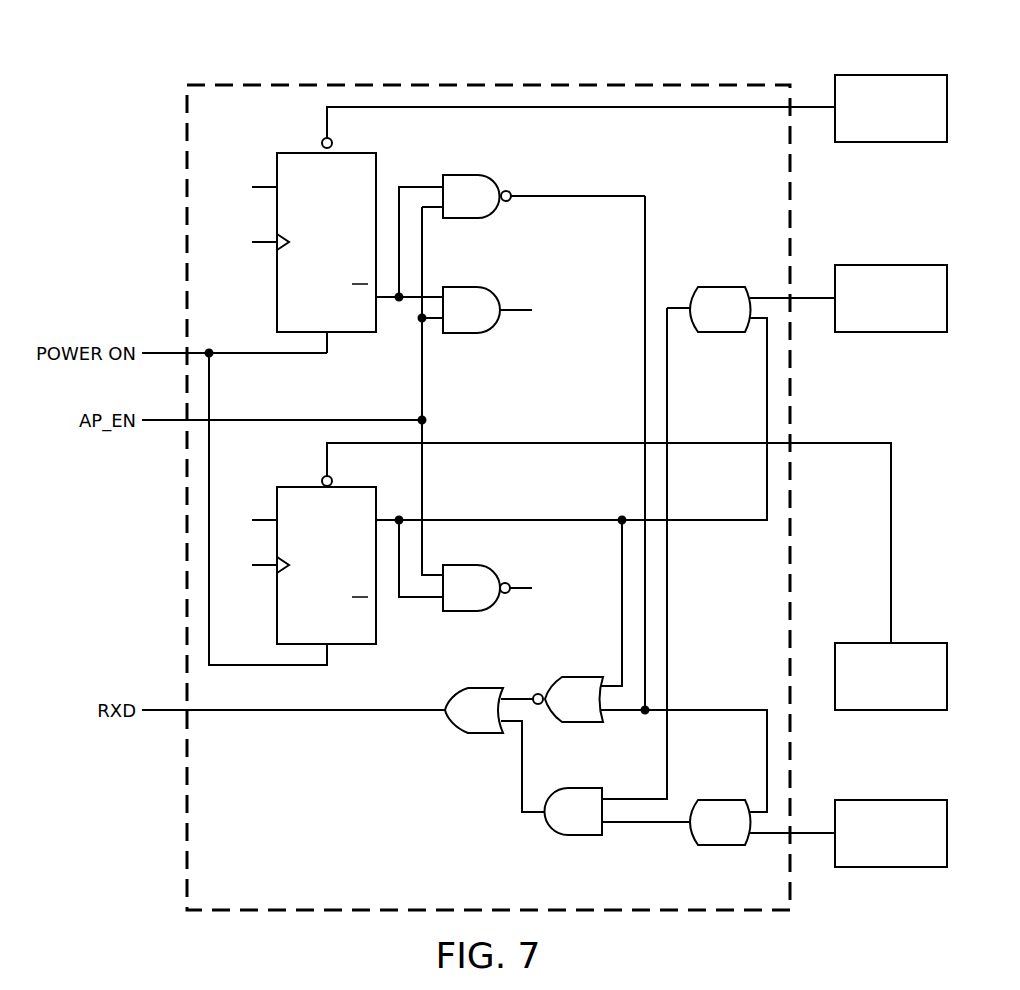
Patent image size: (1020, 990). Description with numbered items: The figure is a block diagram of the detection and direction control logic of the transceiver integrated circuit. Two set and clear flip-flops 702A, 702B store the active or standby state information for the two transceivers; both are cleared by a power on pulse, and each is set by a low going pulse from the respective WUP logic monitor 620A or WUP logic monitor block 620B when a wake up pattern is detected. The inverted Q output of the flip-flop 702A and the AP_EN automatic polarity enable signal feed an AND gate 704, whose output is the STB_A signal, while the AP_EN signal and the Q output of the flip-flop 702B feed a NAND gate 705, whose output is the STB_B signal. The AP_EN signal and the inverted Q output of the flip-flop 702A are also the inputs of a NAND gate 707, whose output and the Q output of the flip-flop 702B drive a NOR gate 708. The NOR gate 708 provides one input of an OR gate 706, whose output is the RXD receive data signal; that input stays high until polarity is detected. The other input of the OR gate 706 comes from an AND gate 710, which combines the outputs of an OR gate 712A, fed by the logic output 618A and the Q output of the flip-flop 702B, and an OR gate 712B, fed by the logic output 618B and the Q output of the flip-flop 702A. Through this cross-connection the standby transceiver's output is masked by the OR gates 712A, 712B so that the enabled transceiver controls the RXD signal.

The set and clear flip-flop 702A is at (300, 150).
The set and clear flip-flop 702B is at (300, 484).
The AND gate 704 is at (467, 286).
The NAND gate 705 is at (466, 612).
The OR gate 706 is at (478, 735).
The NAND gate 707 is at (467, 174).
The NOR gate 708 is at (583, 723).
The AND gate 710 is at (576, 836).
The OR gate 712A is at (728, 287).
The OR gate 712B is at (730, 846).
The logic output 618A is at (891, 264).
The logic output 618B is at (891, 868).
The WUP logic monitor 620A is at (891, 74).
The WUP logic monitor block 620B is at (901, 711).